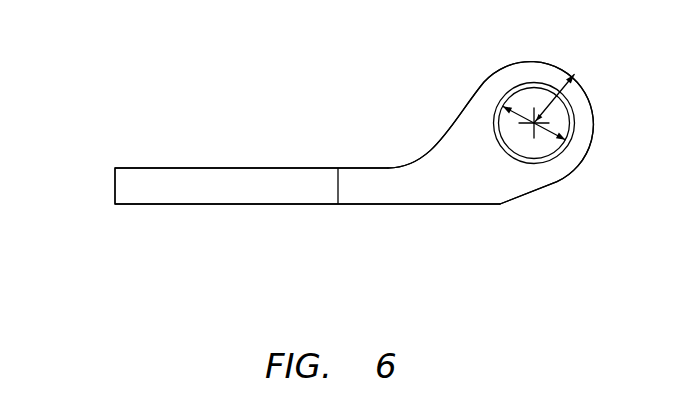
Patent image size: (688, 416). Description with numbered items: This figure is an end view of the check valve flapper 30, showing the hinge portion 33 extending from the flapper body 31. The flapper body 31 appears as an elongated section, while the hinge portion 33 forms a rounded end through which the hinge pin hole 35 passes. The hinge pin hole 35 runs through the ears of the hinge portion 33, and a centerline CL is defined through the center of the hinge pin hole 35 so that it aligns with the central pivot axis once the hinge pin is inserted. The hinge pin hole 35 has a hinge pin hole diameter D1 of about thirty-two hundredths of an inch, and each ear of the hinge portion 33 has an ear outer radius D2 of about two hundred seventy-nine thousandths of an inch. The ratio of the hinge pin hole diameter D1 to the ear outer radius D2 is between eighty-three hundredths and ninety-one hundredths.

The check valve flapper 30 is at (176, 96).
The flapper body 31 is at (106, 210).
The hinge portion 33 is at (564, 196).
The hinge pin hole 35 is at (505, 93).
The centerline CL is at (533, 123).
The hinge pin hole diameter D1 is at (549, 131).
The ear outer radius D2 is at (544, 88).